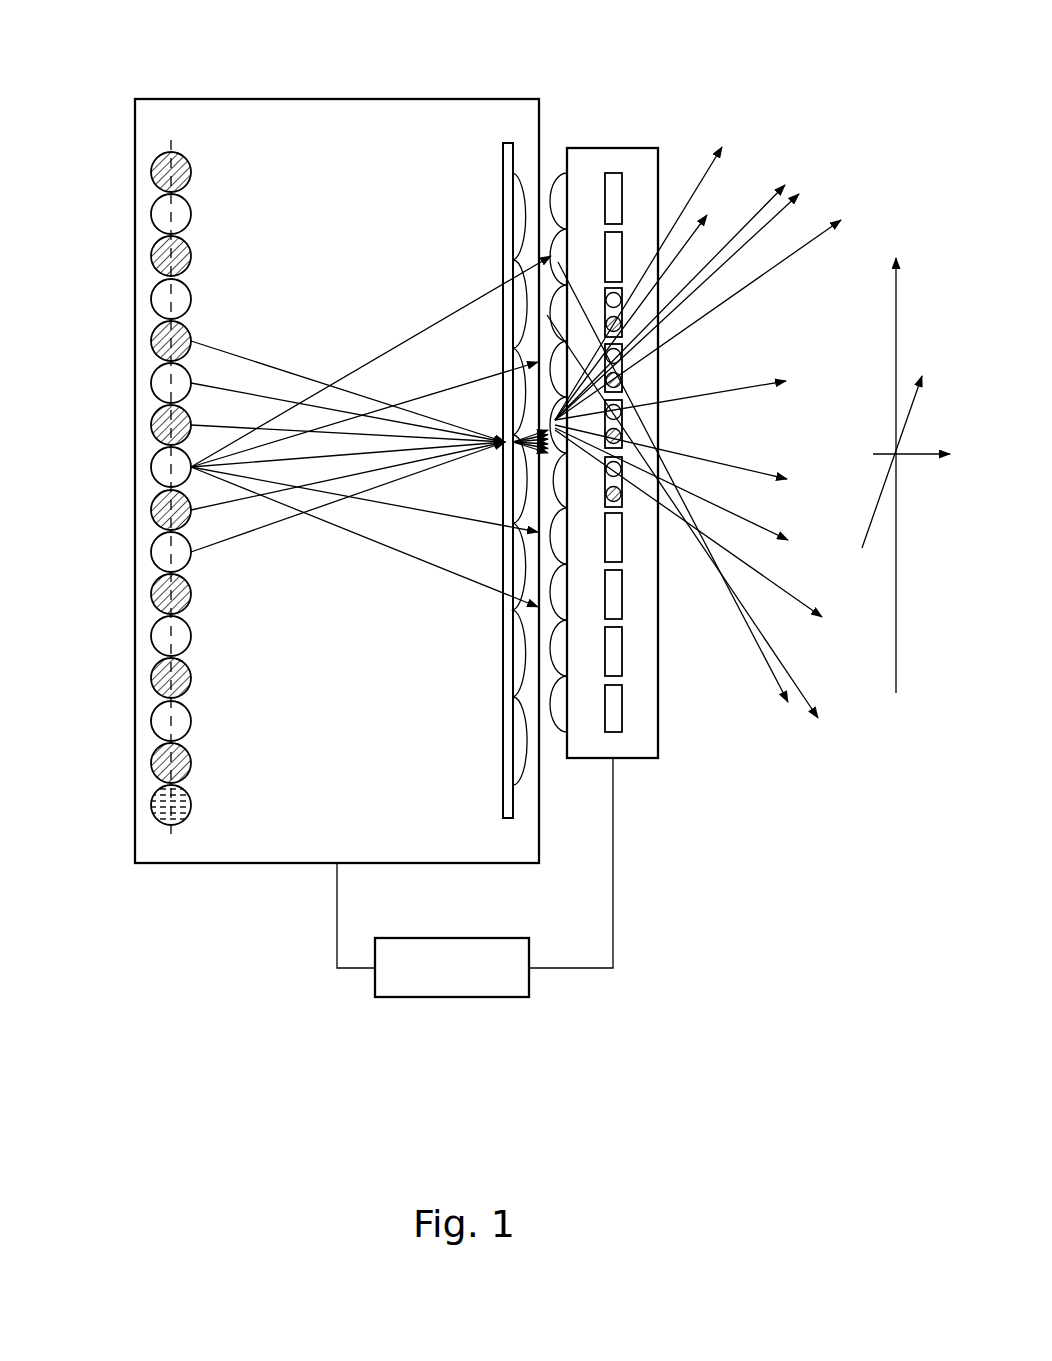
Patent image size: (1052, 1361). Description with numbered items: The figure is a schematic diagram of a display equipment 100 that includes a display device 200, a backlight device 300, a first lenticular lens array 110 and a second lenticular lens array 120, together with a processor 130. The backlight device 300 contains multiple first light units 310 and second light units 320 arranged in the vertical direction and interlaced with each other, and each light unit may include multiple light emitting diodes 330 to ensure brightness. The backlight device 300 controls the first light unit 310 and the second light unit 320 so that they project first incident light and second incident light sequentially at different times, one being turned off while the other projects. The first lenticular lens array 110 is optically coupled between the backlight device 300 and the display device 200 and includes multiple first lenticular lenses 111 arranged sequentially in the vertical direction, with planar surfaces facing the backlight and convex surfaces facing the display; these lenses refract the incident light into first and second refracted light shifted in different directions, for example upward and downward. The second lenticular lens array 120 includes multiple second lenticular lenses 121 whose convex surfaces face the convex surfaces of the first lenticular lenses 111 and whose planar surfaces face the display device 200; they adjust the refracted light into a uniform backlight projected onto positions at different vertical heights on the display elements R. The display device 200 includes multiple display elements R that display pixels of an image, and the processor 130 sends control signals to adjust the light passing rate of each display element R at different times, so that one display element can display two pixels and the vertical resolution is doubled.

The display equipment 100 is at (38, 32).
The backlight device 300 is at (248, 97).
The first light unit 310 is at (150, 176).
The second light unit 320 is at (150, 469).
The light emitting diode 330 is at (152, 811).
The first lenticular lens array 110 is at (509, 140).
The first lenticular lens 111 is at (514, 683).
The second lenticular lens array 120 is at (574, 466).
The second lenticular lens 121 is at (561, 652).
The display device 200 is at (608, 458).
The processor 130 is at (470, 998).
The display element R is at (626, 710).